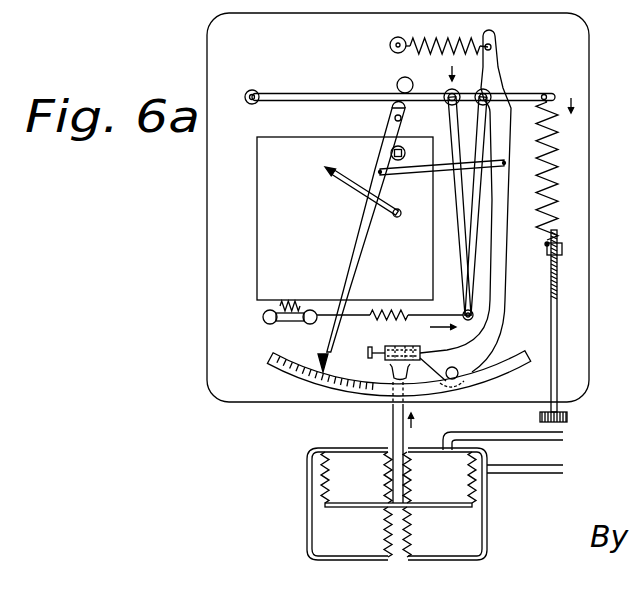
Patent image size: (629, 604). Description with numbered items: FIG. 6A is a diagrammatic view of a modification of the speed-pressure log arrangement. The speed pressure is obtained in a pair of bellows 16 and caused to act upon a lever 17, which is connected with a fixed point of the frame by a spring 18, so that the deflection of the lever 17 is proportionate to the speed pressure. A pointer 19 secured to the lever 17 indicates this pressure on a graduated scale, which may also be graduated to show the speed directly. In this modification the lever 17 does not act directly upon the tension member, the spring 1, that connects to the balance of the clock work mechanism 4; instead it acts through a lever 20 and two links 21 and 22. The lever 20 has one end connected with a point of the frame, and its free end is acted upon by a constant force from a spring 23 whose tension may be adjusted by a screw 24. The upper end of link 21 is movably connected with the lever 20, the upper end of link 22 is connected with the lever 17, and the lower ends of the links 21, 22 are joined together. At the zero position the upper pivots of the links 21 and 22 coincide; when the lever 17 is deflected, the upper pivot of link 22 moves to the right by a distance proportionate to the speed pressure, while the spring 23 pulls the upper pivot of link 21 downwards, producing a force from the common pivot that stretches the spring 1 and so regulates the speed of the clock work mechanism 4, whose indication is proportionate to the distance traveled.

The spring 1 is at (398, 316).
The clock work mechanism 4 is at (345, 218).
The bellows 16 is at (322, 527).
The lever 17 is at (495, 310).
The spring 18 is at (431, 40).
The pointer 19 is at (366, 224).
The lever 20 is at (348, 95).
The link 21 is at (449, 126).
The link 22 is at (480, 132).
The spring 23 is at (556, 141).
The screw 24 is at (557, 313).